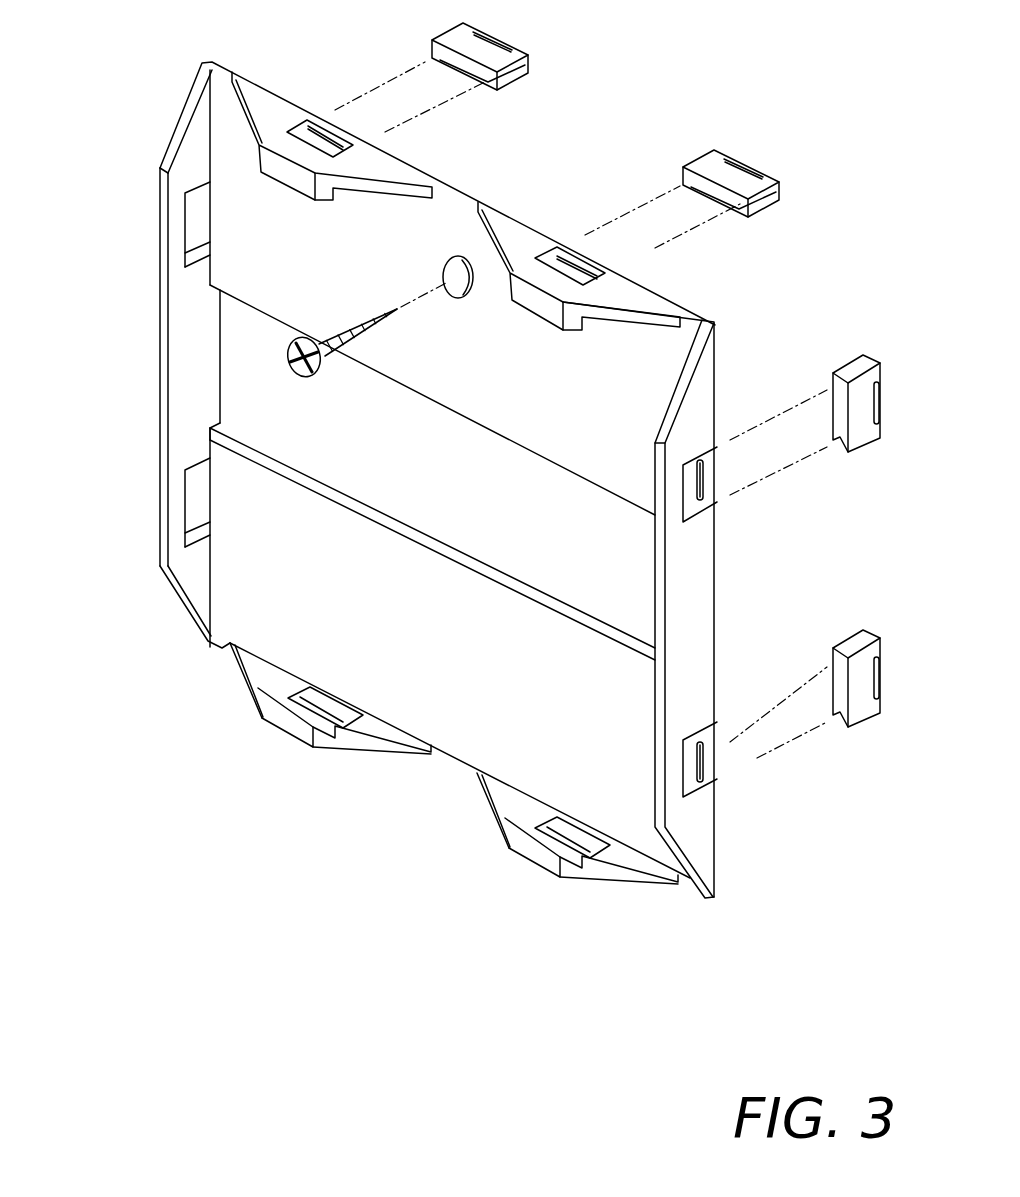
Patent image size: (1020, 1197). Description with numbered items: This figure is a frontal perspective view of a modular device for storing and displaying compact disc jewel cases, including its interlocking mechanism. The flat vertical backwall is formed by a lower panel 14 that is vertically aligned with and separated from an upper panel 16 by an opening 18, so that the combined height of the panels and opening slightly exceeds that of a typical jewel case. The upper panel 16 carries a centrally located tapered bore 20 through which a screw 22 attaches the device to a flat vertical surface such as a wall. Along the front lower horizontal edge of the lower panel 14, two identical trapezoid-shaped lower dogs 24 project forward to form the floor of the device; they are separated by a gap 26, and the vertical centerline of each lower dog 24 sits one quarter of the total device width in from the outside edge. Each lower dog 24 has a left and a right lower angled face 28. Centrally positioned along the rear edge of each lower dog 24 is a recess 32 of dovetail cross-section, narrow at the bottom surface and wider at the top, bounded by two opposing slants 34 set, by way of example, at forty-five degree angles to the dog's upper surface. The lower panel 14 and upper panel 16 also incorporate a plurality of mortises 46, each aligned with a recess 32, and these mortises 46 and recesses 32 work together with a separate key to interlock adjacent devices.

The lower panel 14 is at (385, 393).
The upper panel 16 is at (412, 293).
The opening 18 is at (731, 609).
The tapered bore 20 is at (524, 193).
The screw 22 is at (243, 344).
The lower dog 24 is at (354, 779).
The gap 26 is at (460, 815).
The lower angled face 28 is at (495, 865).
The recess 32 is at (428, 538).
The slant 34 is at (319, 593).
The mortise 46 is at (603, 410).